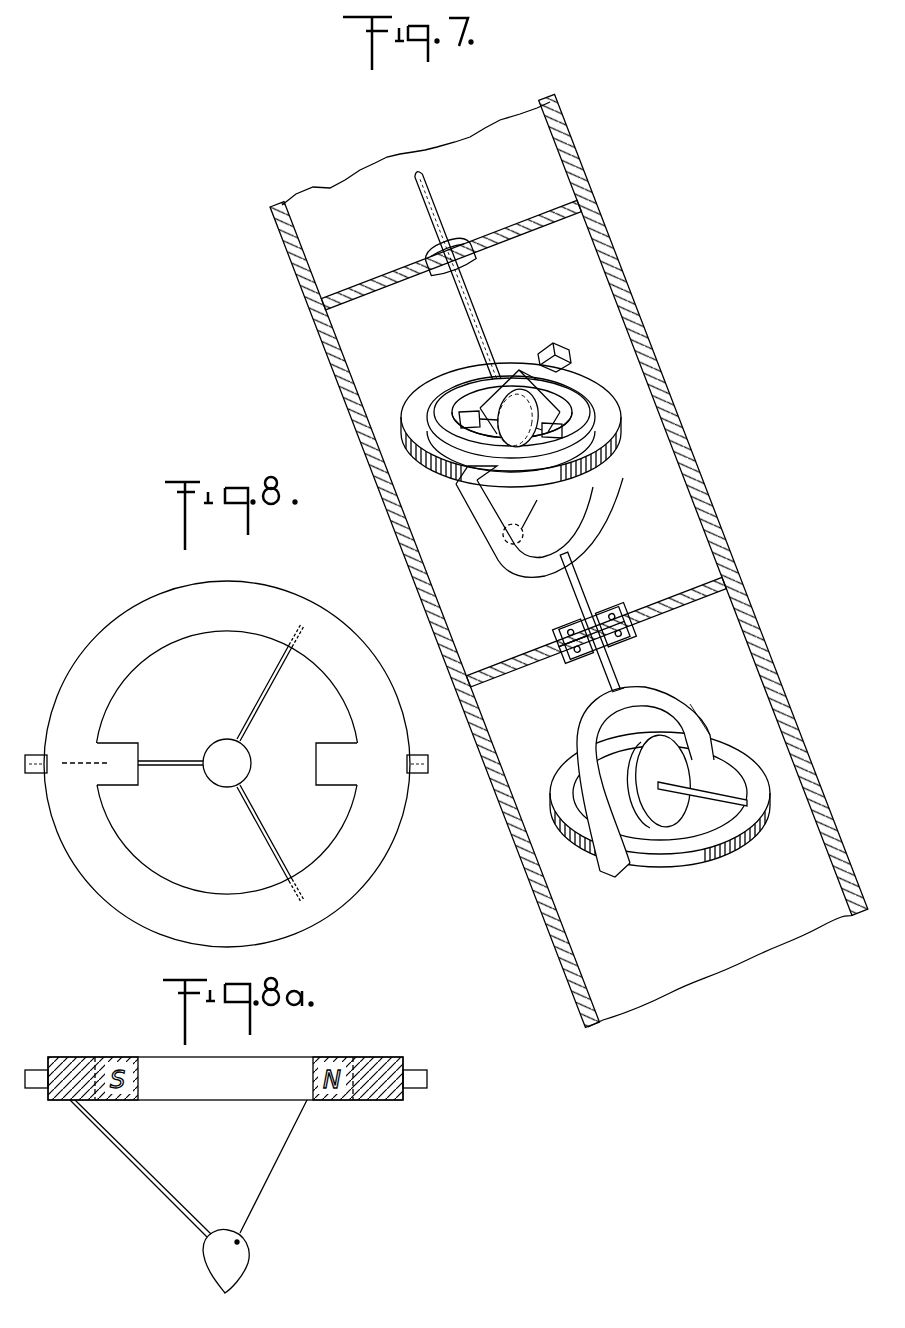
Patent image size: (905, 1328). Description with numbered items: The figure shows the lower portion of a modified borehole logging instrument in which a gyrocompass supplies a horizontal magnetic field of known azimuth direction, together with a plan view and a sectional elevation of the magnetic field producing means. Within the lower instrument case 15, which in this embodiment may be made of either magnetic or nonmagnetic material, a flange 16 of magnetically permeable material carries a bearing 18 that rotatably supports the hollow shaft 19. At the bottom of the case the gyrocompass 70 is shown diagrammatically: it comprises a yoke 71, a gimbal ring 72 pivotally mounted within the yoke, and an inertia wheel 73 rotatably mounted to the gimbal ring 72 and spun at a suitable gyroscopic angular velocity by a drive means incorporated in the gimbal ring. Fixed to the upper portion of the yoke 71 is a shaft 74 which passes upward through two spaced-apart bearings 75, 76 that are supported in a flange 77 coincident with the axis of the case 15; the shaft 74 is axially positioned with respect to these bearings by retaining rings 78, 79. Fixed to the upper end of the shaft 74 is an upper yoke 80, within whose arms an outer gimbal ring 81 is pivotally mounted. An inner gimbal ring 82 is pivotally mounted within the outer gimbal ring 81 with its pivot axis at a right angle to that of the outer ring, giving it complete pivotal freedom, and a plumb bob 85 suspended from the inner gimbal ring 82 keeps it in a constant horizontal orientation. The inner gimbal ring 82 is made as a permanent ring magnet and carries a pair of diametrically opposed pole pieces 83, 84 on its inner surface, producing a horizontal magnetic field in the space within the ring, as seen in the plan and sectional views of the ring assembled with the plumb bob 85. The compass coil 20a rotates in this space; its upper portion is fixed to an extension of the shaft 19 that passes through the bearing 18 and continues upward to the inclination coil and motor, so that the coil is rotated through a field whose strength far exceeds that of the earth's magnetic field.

In FIG. 7, the lower instrument case 15 is at (616, 281).
In FIG. 7, the flange 16 is at (517, 222).
In FIG. 7, the bearing 18 is at (446, 244).
In FIG. 7, the hollow shaft 19 is at (466, 288).
In FIG. 7, the compass coil 20a is at (526, 365).
In FIG. 7, the gyrocompass 70 is at (583, 725).
In FIG. 7, the yoke 71 is at (699, 716).
In FIG. 7, the gimbal ring 72 is at (749, 838).
In FIG. 7, the inertia wheel 73 is at (682, 773).
In FIG. 7, the shaft 74 is at (626, 688).
In FIG. 7, the bearing 75 is at (570, 638).
In FIG. 7, the bearing 76 is at (588, 660).
In FIG. 7, the flange 77 is at (692, 592).
In FIG. 7, the retaining ring 78 is at (603, 612).
In FIG. 7, the retaining ring 79 is at (620, 645).
In FIG. 7, the upper yoke 80 is at (484, 539).
In FIG. 7, the outer gimbal ring 81 is at (614, 453).
In FIG. 7, the inner gimbal ring 82 is at (465, 393).
In FIG. 8, the inner gimbal ring 82 is at (112, 633).
In FIG. 7, the pole piece 83 is at (470, 430).
In FIG. 8, the pole piece 83 is at (126, 742).
In FIG. 7, the pole piece 84 is at (560, 412).
In FIG. 8, the pole piece 84 is at (330, 742).
In FIG. 7, the plumb bob 85 is at (536, 531).
In FIG. 8A, the plumb bob 85 is at (232, 1268).